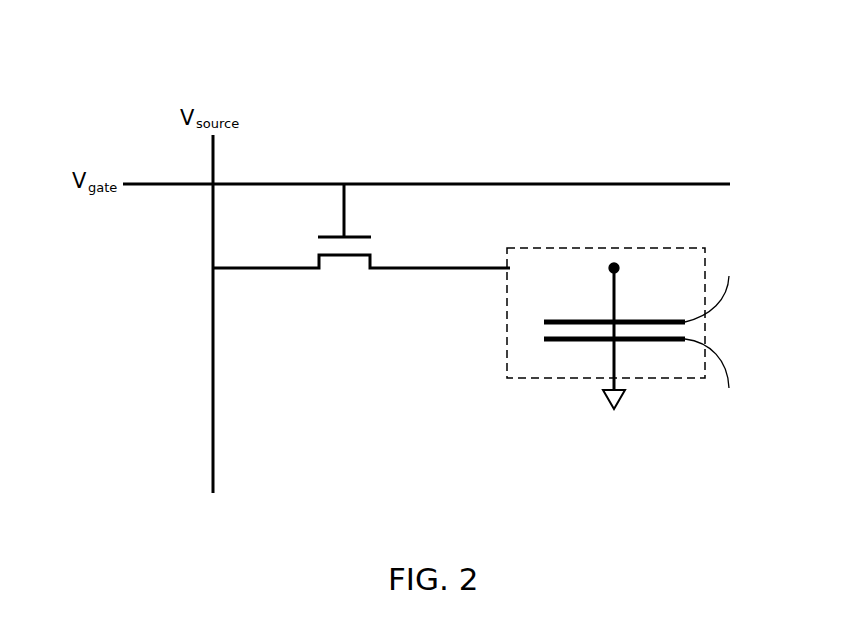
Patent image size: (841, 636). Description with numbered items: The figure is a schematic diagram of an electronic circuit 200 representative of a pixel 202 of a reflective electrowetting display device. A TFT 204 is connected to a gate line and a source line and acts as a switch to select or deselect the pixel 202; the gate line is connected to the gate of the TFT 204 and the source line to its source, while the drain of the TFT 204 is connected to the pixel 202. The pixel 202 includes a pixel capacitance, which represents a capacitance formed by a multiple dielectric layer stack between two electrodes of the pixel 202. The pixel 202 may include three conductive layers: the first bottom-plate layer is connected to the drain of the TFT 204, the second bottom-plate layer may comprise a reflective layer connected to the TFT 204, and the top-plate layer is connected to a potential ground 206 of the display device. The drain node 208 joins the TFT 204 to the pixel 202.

The electronic circuit 200 is at (656, 76).
The pixel 202 is at (505, 305).
The TFT 204 is at (344, 272).
The potential ground 206 is at (612, 406).
The node 208 is at (614, 263).